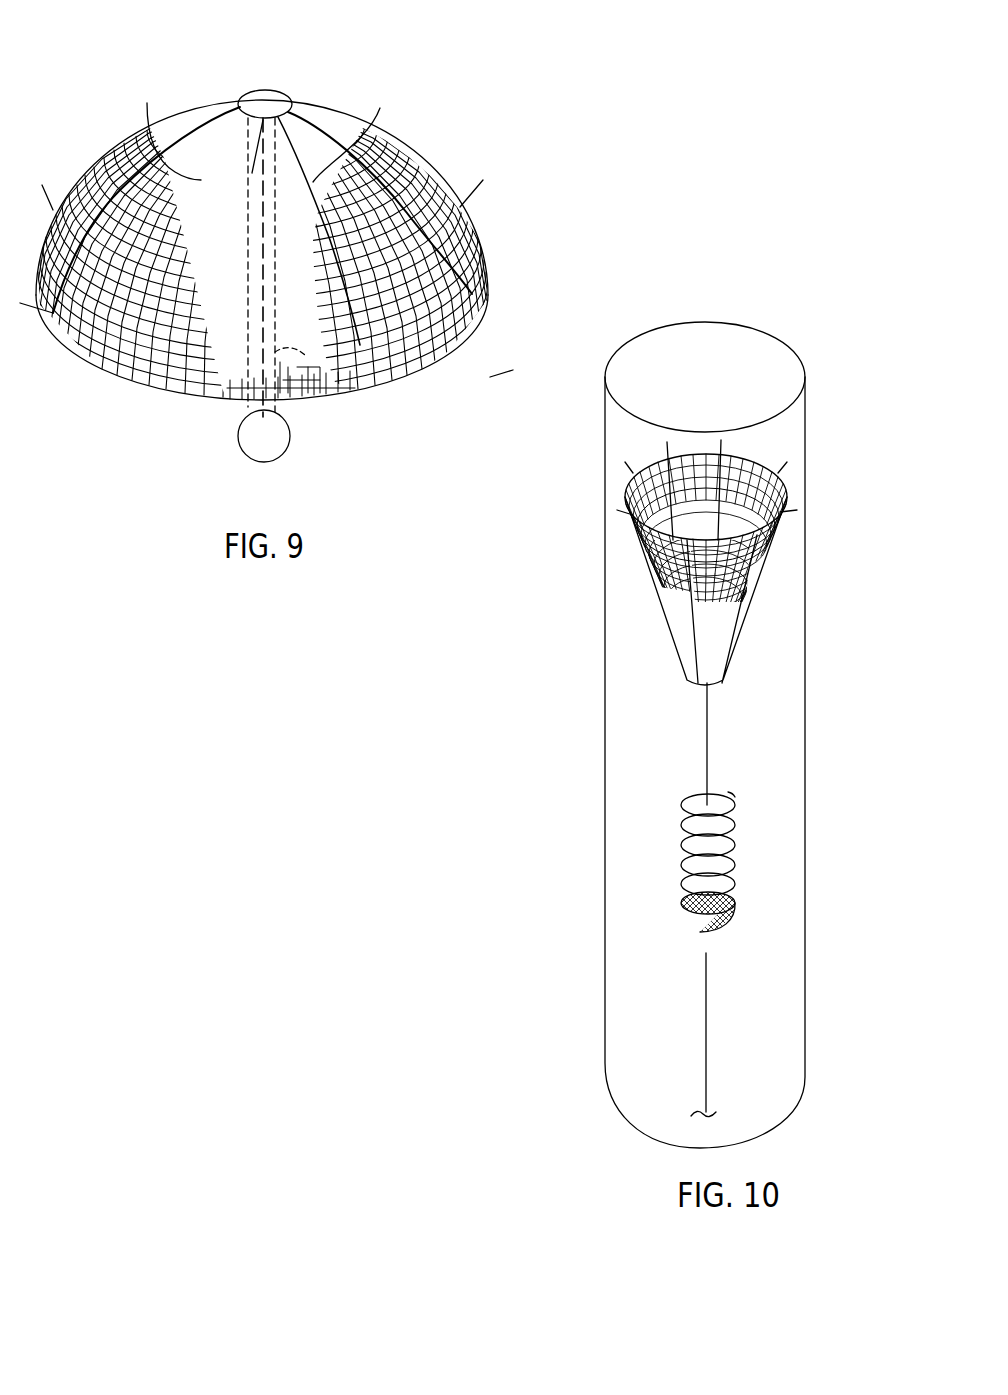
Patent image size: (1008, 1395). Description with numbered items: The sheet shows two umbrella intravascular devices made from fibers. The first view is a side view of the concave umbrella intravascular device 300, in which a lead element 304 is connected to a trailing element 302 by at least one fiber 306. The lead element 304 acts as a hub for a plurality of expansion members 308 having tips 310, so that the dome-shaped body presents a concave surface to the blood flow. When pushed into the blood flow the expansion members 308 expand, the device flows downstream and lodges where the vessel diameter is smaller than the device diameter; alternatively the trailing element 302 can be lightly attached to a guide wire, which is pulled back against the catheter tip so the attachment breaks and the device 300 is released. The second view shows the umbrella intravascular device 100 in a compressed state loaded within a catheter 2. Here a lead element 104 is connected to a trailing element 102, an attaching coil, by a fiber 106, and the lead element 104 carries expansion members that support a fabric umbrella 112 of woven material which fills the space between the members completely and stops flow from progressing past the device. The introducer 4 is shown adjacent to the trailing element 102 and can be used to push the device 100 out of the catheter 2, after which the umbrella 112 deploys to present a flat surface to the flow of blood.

In FIG. 9, the umbrella intravascular device 300 is at (181, 62).
In FIG. 9, the trailing element 302 is at (238, 437).
In FIG. 9, the lead element 304 is at (271, 90).
In FIG. 9, the fiber 306 is at (300, 406).
In FIG. 9, the expansion members 308 is at (358, 154).
In FIG. 9, the tips 310 is at (483, 180).
In FIG. 10, the catheter 2 is at (606, 970).
In FIG. 10, the introducer 4 is at (702, 1052).
In FIG. 10, the umbrella intravascular device 100 is at (778, 592).
In FIG. 10, the trailing element 102 is at (735, 863).
In FIG. 10, the lead element 104 is at (703, 683).
In FIG. 10, the fiber 106 is at (700, 735).
In FIG. 10, the fabric umbrella 112 is at (677, 578).